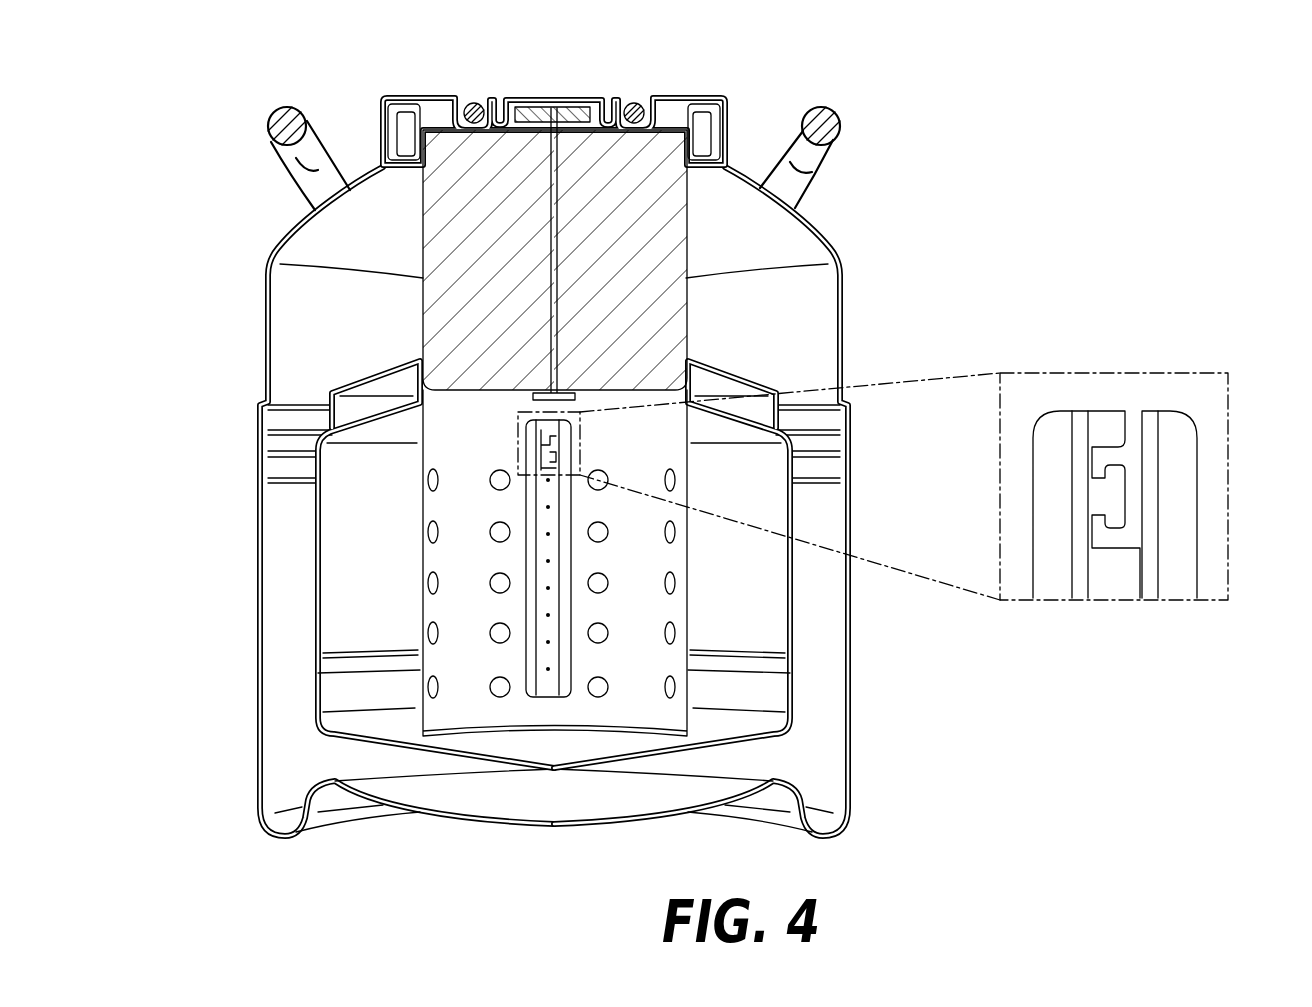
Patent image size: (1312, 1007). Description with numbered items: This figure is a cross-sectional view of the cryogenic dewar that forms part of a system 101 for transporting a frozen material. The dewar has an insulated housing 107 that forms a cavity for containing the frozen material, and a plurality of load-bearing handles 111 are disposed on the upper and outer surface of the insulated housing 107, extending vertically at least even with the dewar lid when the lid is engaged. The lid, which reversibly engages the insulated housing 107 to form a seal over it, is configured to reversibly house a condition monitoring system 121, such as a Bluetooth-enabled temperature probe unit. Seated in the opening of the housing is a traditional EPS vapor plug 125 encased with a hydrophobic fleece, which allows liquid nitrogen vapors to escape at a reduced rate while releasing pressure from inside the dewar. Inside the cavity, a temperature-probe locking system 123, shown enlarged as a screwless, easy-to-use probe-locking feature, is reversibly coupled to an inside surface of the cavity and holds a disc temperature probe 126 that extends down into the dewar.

The system 101 is at (203, 193).
The insulated housing 107 is at (262, 598).
The load-bearing handles 111 is at (271, 118).
The condition monitoring system 121 is at (584, 100).
The temperature-probe locking system 123 is at (1115, 492).
The EPS vapor plug 125 is at (677, 300).
The disc temperature probe 126 is at (527, 399).